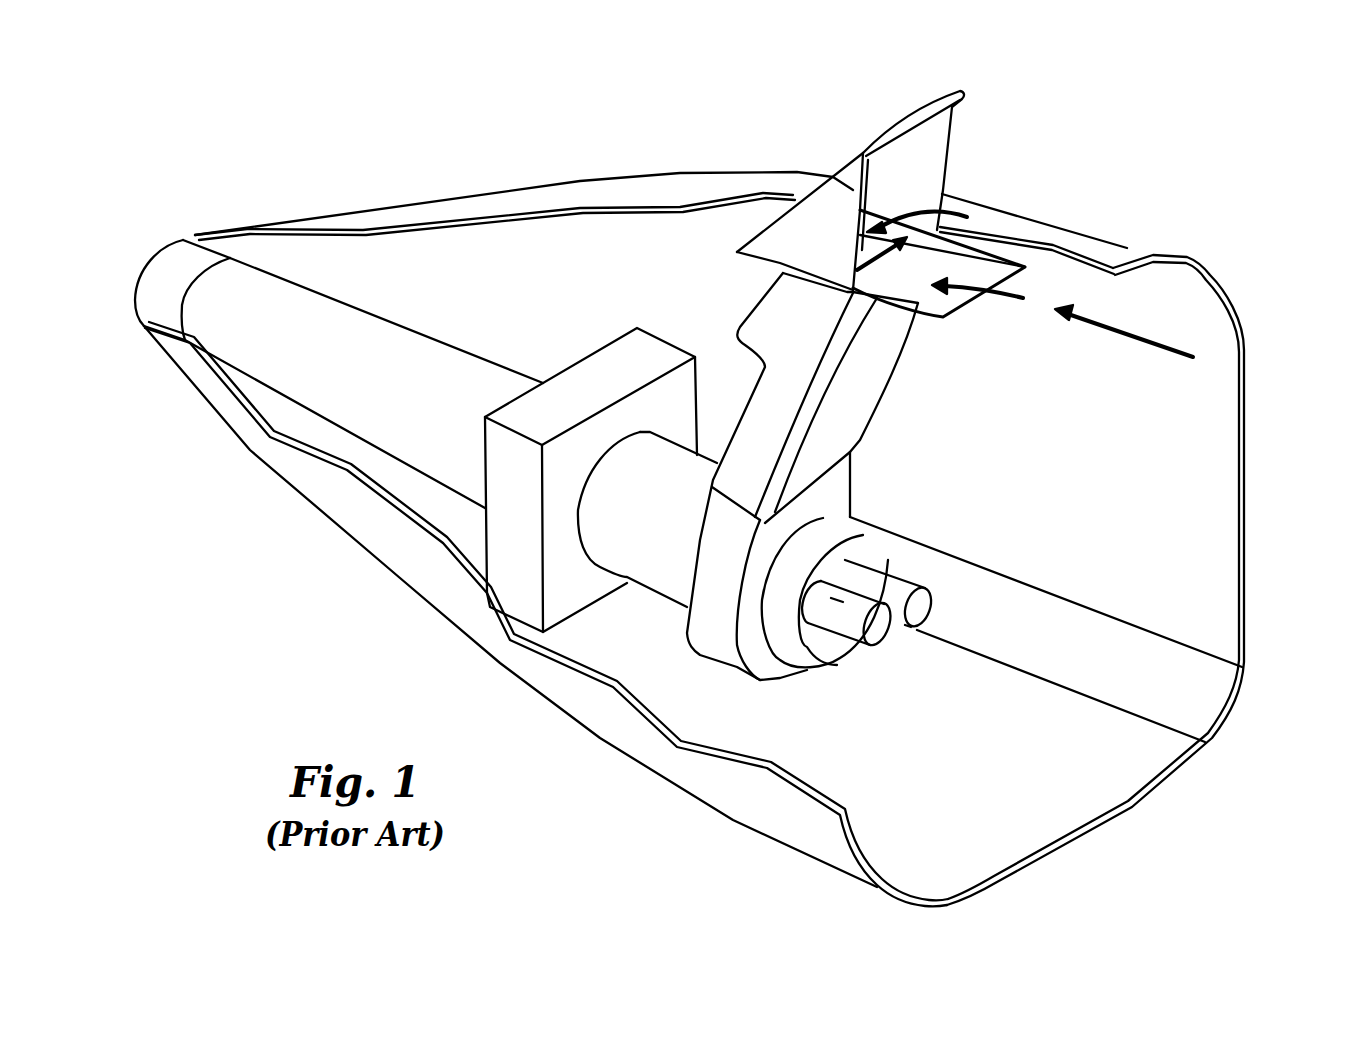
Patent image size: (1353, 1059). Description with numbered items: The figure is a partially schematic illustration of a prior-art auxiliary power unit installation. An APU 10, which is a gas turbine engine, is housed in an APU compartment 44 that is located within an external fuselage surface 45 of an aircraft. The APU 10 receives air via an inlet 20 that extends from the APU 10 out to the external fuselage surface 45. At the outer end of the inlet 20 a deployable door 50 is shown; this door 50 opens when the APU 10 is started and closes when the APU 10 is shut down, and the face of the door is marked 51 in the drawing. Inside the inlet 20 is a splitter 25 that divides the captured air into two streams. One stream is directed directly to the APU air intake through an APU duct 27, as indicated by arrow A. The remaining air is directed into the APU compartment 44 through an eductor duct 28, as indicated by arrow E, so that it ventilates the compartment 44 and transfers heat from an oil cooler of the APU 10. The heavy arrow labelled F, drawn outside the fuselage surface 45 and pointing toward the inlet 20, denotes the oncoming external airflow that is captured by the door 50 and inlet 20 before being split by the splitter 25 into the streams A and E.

The APU 10 is at (832, 670).
The inlet 20 is at (930, 367).
The splitter 25 is at (987, 232).
The APU duct 27 is at (847, 392).
The eductor duct 28 is at (740, 323).
The APU compartment 44 is at (570, 273).
The external fuselage surface 45 is at (1187, 257).
The deployable door 50 is at (917, 108).
The vane surface 51 is at (822, 218).
The arrow E is at (943, 197).
The arrow A is at (1003, 297).
The freestream flow F is at (1133, 337).